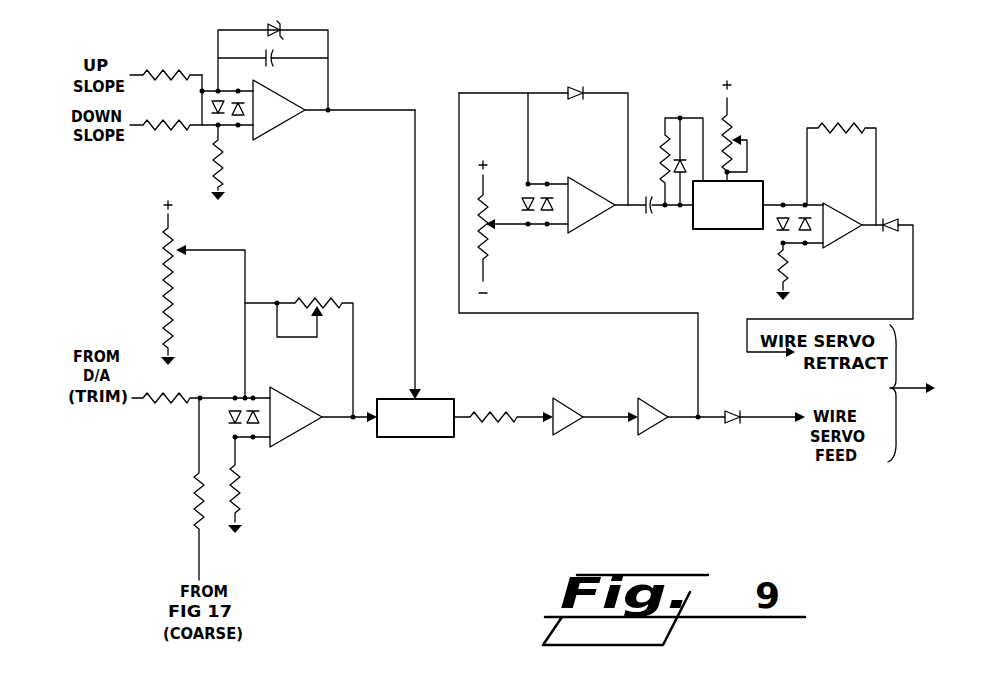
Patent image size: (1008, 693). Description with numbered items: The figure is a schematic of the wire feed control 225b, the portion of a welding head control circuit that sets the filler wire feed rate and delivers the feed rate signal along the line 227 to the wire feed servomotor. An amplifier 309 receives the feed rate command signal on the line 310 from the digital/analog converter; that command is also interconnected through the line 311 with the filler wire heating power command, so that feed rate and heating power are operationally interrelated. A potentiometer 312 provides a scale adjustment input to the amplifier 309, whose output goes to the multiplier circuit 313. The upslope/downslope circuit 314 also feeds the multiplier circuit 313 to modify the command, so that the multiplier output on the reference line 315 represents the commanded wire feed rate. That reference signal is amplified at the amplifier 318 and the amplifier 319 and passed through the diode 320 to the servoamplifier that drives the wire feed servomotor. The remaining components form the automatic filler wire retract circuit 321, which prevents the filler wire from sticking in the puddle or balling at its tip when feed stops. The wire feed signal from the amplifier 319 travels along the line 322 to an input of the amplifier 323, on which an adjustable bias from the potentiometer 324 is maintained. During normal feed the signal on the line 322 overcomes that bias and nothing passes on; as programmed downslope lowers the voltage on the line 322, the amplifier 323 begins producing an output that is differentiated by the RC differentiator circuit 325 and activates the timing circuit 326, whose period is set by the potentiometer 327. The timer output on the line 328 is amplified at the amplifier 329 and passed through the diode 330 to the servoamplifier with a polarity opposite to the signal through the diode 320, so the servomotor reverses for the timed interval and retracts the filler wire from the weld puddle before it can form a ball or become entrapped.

The amplifier 309 is at (300, 432).
The line 310 is at (138, 393).
The line 311 is at (199, 550).
The potentiometer 312 is at (165, 248).
The multiplier circuit 313 is at (427, 440).
The upslope/downslope circuit 314 is at (297, 133).
The reference line 315 is at (465, 420).
The amplifier 318 is at (561, 432).
The amplifier 319 is at (655, 432).
The diode 320 is at (735, 425).
The automatic filler wire retract circuit 321 is at (576, 64).
The line 322 is at (698, 366).
The amplifier 323 is at (588, 222).
The potentiometer 324 is at (490, 243).
The RC differentiator circuit 325 is at (654, 116).
The timing circuit 326 is at (712, 229).
The potentiometer 327 is at (721, 138).
The line 328 is at (775, 204).
The amplifier 329 is at (836, 242).
The diode 330 is at (897, 221).
The line 227 is at (908, 384).
The wire feed control 225b is at (455, 542).